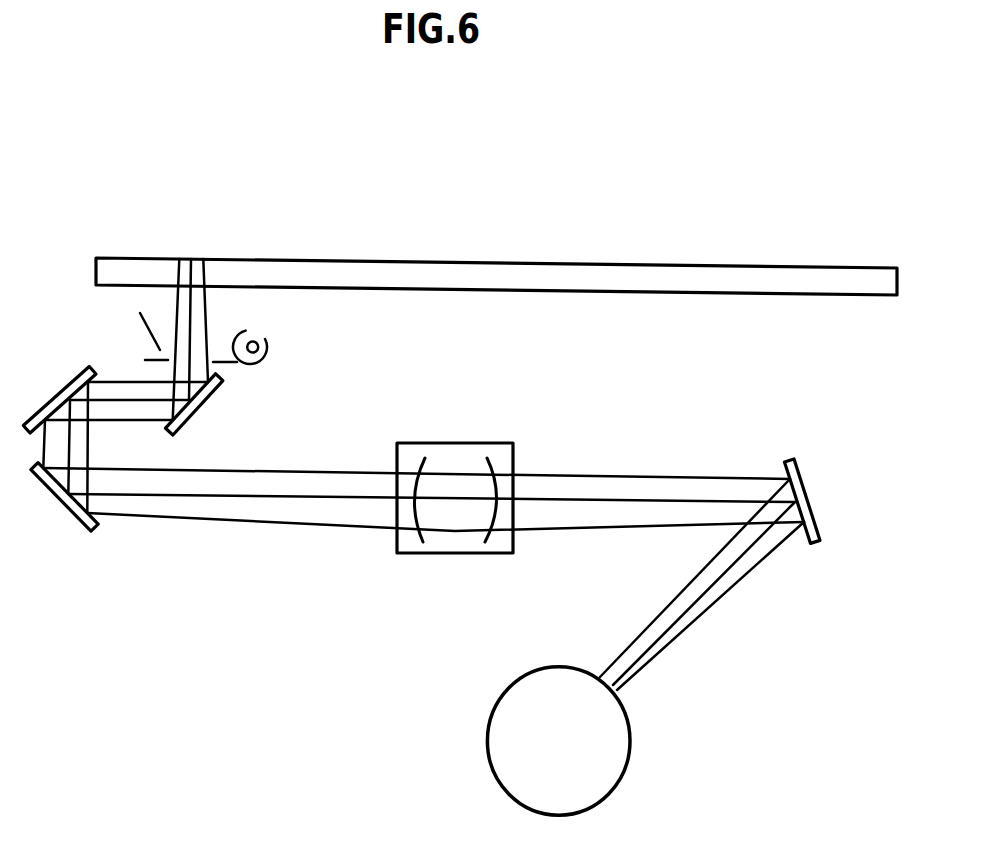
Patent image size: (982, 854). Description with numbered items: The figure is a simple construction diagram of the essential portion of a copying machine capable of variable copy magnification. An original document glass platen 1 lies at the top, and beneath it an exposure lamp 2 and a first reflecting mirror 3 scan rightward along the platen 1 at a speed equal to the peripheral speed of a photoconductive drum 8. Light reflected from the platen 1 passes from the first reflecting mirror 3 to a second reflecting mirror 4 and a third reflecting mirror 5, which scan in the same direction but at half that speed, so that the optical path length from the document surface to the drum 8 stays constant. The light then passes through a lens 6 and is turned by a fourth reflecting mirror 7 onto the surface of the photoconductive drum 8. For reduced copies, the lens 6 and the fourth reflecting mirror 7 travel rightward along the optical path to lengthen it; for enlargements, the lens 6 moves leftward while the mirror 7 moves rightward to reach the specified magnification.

The original document glass platen 1 is at (537, 263).
The exposure lamp 2 is at (265, 339).
The first reflecting mirror 3 is at (218, 381).
The second reflecting mirror 4 is at (58, 391).
The third reflecting mirror 5 is at (89, 534).
The lens 6 is at (477, 443).
The fourth reflecting mirror 7 is at (820, 542).
The photoconductive drum 8 is at (630, 741).